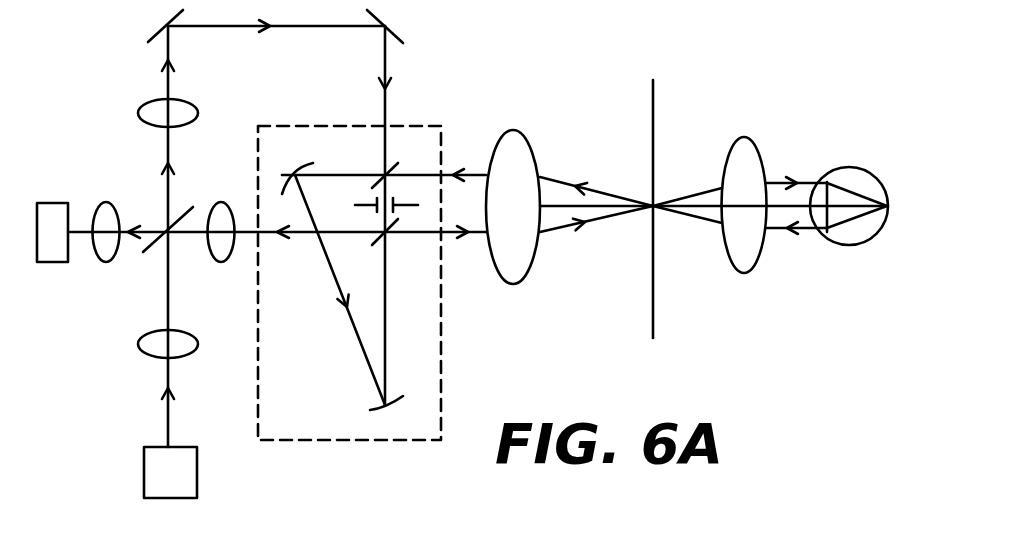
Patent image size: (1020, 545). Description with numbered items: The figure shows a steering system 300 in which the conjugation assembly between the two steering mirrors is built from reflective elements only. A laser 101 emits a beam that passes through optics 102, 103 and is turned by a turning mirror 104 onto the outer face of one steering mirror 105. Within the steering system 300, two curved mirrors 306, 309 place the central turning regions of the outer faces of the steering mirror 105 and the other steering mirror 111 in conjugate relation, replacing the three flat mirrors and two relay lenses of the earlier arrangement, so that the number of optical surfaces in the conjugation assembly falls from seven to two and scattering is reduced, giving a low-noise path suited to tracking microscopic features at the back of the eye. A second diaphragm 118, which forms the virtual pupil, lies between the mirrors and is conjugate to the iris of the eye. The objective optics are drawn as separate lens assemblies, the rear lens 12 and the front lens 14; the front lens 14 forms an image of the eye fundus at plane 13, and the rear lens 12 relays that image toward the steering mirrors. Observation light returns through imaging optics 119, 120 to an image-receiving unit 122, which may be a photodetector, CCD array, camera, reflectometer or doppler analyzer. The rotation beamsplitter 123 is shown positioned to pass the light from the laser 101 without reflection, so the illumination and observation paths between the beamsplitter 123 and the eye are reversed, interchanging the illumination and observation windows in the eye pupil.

The laser 101 is at (197, 472).
The optics 102 is at (142, 343).
The optics 103 is at (143, 102).
The turning mirror 104 is at (390, 25).
The steering mirror 105 is at (388, 167).
The steering mirror 111 is at (378, 247).
The second diaphragm 118 is at (362, 203).
The imaging optics 119 is at (221, 202).
The imaging optics 120 is at (104, 202).
The image-receiving unit 122 is at (53, 203).
The rotation beamsplitter 123 is at (150, 245).
The steering system 300 is at (318, 410).
The curved mirror 306 is at (298, 170).
The curved mirror 309 is at (383, 410).
The rear lens 12 is at (525, 132).
The plane 13 is at (655, 118).
The front lens 14 is at (745, 137).